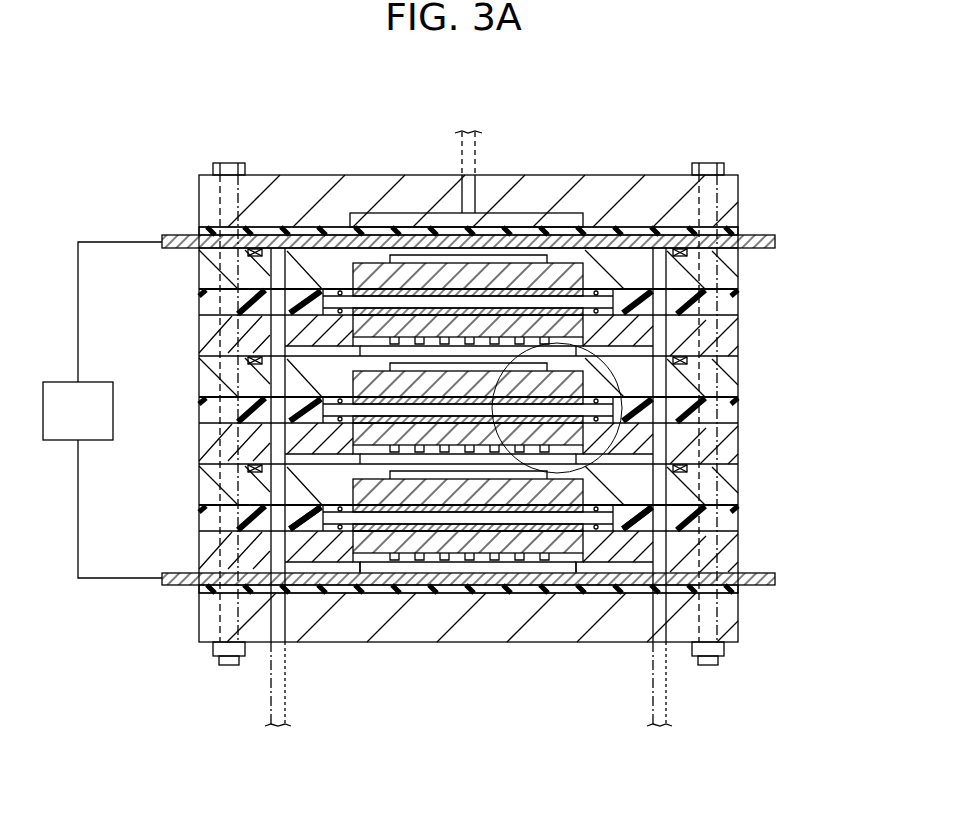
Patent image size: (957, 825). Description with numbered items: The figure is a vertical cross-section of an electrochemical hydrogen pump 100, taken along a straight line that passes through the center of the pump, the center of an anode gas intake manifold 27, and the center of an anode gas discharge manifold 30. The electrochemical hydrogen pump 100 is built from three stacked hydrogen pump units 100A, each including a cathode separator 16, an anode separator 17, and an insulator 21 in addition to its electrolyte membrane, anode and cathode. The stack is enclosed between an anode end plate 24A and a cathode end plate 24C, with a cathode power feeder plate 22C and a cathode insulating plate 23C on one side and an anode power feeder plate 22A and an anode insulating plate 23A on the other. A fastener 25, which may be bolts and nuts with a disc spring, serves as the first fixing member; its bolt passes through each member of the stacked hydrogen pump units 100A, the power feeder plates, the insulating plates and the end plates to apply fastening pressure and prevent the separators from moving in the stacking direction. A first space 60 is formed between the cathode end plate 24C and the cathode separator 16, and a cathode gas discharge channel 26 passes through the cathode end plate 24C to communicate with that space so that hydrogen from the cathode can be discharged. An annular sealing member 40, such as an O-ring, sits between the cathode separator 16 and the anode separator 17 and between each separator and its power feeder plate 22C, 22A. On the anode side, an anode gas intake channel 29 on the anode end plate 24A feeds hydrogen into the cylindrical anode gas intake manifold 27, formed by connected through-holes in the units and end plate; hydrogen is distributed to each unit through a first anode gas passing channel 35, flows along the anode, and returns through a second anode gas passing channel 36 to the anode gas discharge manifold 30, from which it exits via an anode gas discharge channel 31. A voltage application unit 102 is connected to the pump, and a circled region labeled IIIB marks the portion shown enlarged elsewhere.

The electrochemical hydrogen pump 100 is at (398, 78).
The hydrogen pump unit 100A is at (196, 357).
The voltage application unit 102 is at (97, 426).
The cathode separator 16 is at (740, 374).
The anode separator 17 is at (740, 444).
The insulator 21 is at (740, 414).
The anode power feeder plate 22A is at (778, 578).
The cathode power feeder plate 22C is at (778, 242).
The anode insulating plate 23A is at (742, 590).
The cathode insulating plate 23C is at (740, 230).
The anode end plate 24A is at (740, 622).
The cathode end plate 24C is at (740, 182).
The fastener 25 is at (229, 166).
The cathode gas discharge channel 26 is at (462, 166).
The anode gas intake manifold 27 is at (277, 521).
The anode gas intake channel 29 is at (283, 692).
The anode gas discharge manifold 30 is at (660, 521).
The anode gas discharge channel 31 is at (663, 692).
The first anode gas passing channel 35 is at (343, 598).
The second anode gas passing channel 36 is at (585, 597).
The annular sealing member 40 is at (738, 352).
The first space 60 is at (512, 214).
The detail view indicator IIIB is at (628, 368).